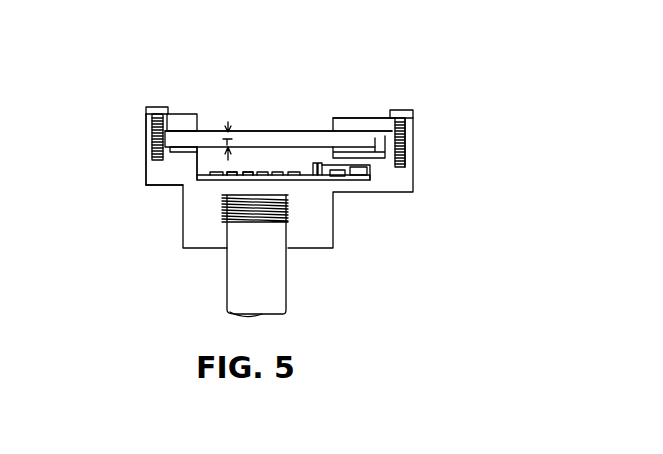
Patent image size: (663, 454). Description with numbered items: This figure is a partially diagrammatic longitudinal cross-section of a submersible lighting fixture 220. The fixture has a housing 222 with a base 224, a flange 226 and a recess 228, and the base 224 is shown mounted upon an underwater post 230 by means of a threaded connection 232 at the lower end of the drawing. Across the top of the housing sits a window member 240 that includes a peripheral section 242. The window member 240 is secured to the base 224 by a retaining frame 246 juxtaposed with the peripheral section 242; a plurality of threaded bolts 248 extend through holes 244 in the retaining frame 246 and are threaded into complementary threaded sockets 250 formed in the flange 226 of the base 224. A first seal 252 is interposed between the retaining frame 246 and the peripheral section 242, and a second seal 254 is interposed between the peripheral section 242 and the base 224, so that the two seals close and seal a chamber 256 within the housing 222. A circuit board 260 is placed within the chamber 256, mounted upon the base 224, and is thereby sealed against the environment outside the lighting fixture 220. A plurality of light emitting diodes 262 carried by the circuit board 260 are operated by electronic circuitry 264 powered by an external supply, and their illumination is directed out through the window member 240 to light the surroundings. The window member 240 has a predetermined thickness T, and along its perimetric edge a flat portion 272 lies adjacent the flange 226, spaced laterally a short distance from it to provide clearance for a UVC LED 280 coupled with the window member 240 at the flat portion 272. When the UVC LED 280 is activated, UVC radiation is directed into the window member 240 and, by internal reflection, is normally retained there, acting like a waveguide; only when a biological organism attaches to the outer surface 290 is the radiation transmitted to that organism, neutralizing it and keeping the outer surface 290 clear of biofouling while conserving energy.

The submersible lighting fixture 220 is at (336, 117).
The housing 222 is at (181, 212).
The base 224 is at (188, 228).
The flange 226 is at (150, 148).
The recess 228 is at (192, 143).
The underwater post 230 is at (227, 285).
The threaded connection 232 is at (283, 222).
The window member 240 is at (253, 128).
The peripheral section 242 is at (186, 128).
The holes 244 is at (415, 121).
The retaining frame 246 is at (386, 112).
The threaded bolts 248 is at (158, 106).
The threaded sockets 250 is at (405, 148).
The first seal 252 is at (147, 128).
The second seal 254 is at (184, 142).
The chamber 256 is at (275, 155).
The circuit board 260 is at (362, 180).
The light emitting diodes 262 is at (249, 172).
The electronic circuitry 264 is at (368, 172).
The flat portion 272 is at (405, 136).
The UVC LED 280 is at (405, 142).
The outer surface 290 is at (311, 130).